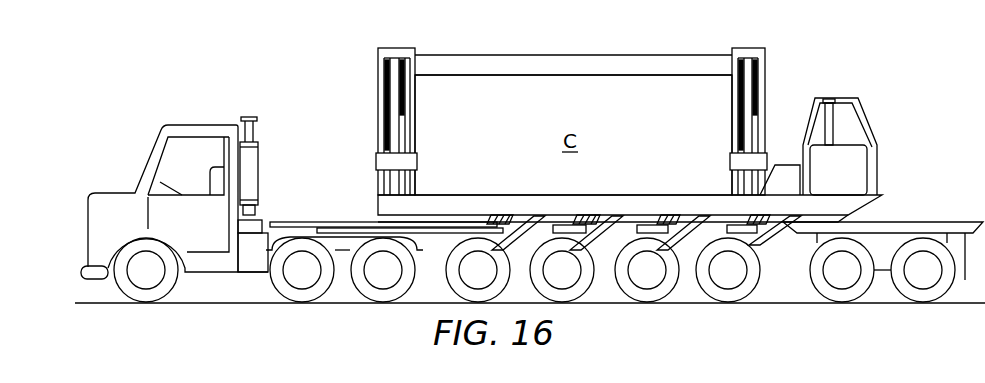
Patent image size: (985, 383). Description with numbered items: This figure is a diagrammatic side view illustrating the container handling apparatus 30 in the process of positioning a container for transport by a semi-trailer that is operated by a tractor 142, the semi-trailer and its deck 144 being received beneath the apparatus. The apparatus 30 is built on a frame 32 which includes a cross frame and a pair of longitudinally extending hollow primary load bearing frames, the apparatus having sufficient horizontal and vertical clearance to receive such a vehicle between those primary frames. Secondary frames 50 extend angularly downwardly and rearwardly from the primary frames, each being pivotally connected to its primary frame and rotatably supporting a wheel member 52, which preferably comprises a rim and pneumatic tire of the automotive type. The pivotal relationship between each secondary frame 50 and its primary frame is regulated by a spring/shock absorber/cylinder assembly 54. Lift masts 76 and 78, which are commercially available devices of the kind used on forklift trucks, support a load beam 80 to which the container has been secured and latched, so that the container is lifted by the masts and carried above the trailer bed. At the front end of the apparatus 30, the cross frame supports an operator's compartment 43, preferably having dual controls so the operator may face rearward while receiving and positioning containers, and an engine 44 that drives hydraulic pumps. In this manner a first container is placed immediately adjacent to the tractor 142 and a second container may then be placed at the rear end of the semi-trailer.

The tractor 142 is at (170, 121).
The tractor deck 144 is at (345, 218).
The frame 32 is at (872, 205).
The secondary frames 50 is at (528, 220).
The spring/shock absorber/cylinder assembly 54 is at (674, 207).
The wheel members 52 is at (633, 298).
The load beam 80 is at (573, 52).
The lift mast 78 is at (420, 110).
The lift mast 76 is at (730, 100).
The container handling apparatus 30 is at (847, 141).
The operator's compartment 43 is at (858, 108).
The engine 44 is at (849, 182).